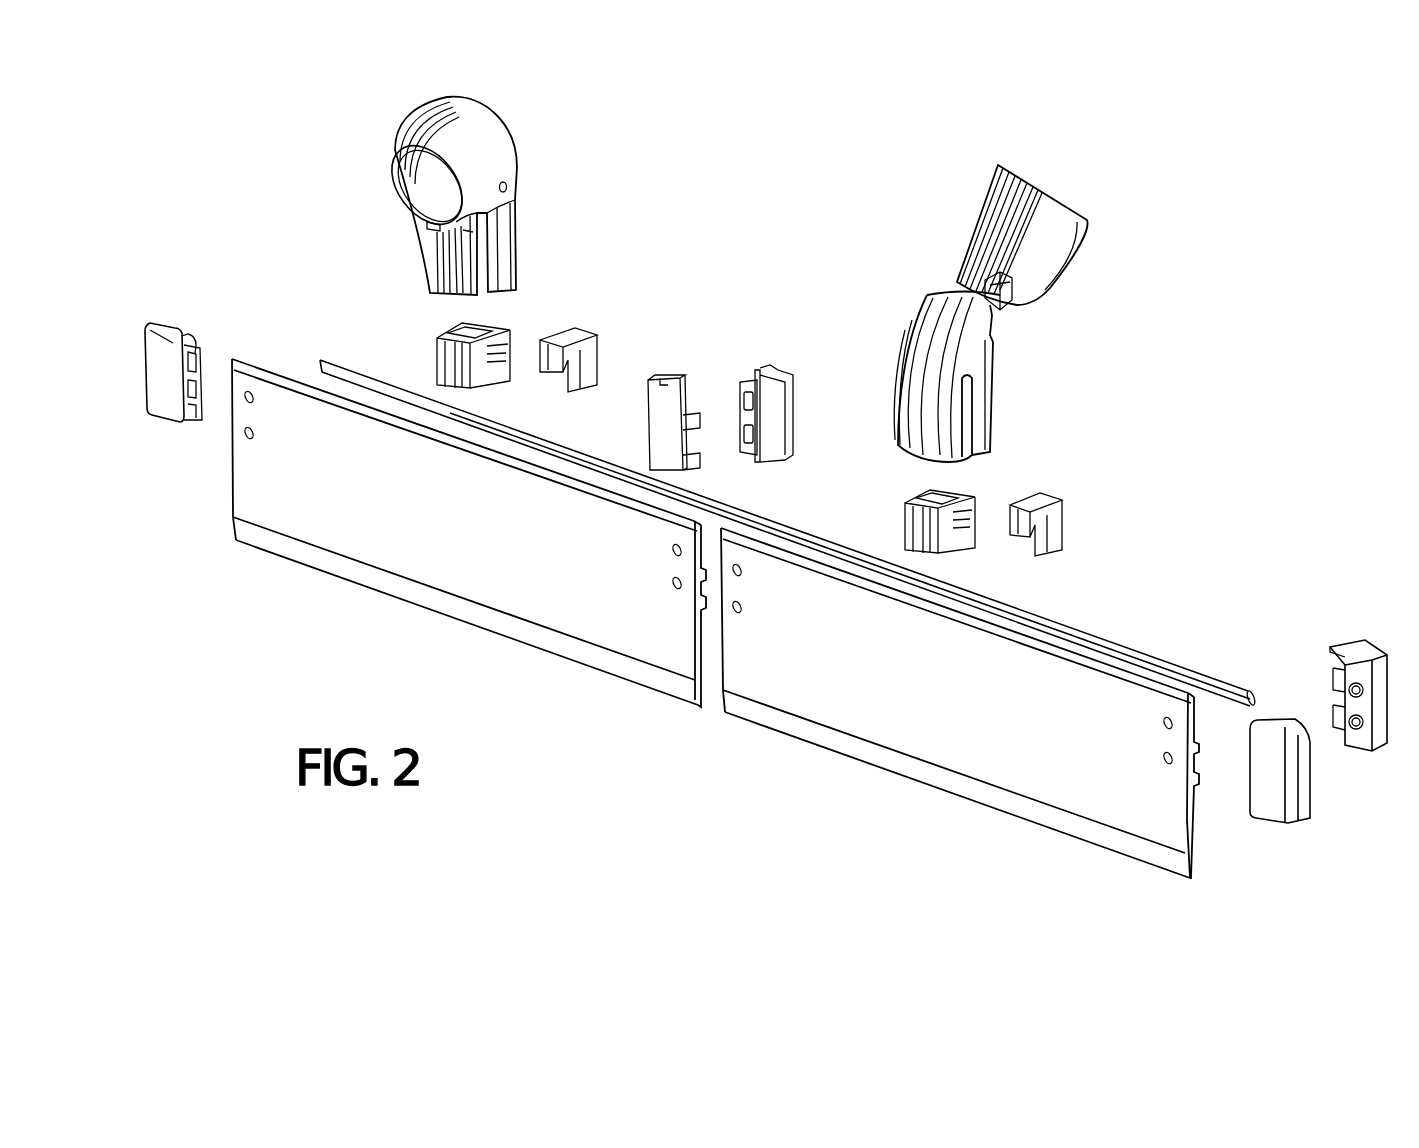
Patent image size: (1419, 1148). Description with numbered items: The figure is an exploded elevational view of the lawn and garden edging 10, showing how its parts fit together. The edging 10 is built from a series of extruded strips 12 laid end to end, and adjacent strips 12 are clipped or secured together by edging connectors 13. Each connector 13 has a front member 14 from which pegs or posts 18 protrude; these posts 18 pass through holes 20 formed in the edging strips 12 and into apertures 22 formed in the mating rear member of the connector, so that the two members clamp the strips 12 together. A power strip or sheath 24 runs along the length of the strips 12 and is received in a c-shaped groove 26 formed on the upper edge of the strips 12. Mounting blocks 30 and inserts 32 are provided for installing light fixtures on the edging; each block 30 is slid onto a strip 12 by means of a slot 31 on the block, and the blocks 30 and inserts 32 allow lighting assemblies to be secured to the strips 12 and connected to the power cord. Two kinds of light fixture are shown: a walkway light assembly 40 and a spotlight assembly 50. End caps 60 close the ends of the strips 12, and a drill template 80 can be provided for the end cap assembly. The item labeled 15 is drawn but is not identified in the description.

The edging 10 is at (634, 744).
The extruded strips 12 is at (518, 593).
The edging connectors 13 is at (641, 411).
The front member 14 is at (655, 378).
The connector body 15 is at (776, 387).
The pegs or posts 18 is at (700, 465).
The holes 20 is at (672, 585).
The apertures 22 is at (742, 400).
The power strip or sheath 24 is at (1125, 640).
The c-shaped groove 26 is at (1195, 703).
The mounting blocks 30 is at (437, 332).
The slot 31 is at (478, 386).
The inserts 32 is at (580, 332).
The walkway light assembly 40 is at (500, 143).
The spotlight assembly 50 is at (1052, 258).
The end caps 60 is at (170, 330).
The drill template 80 is at (1356, 645).